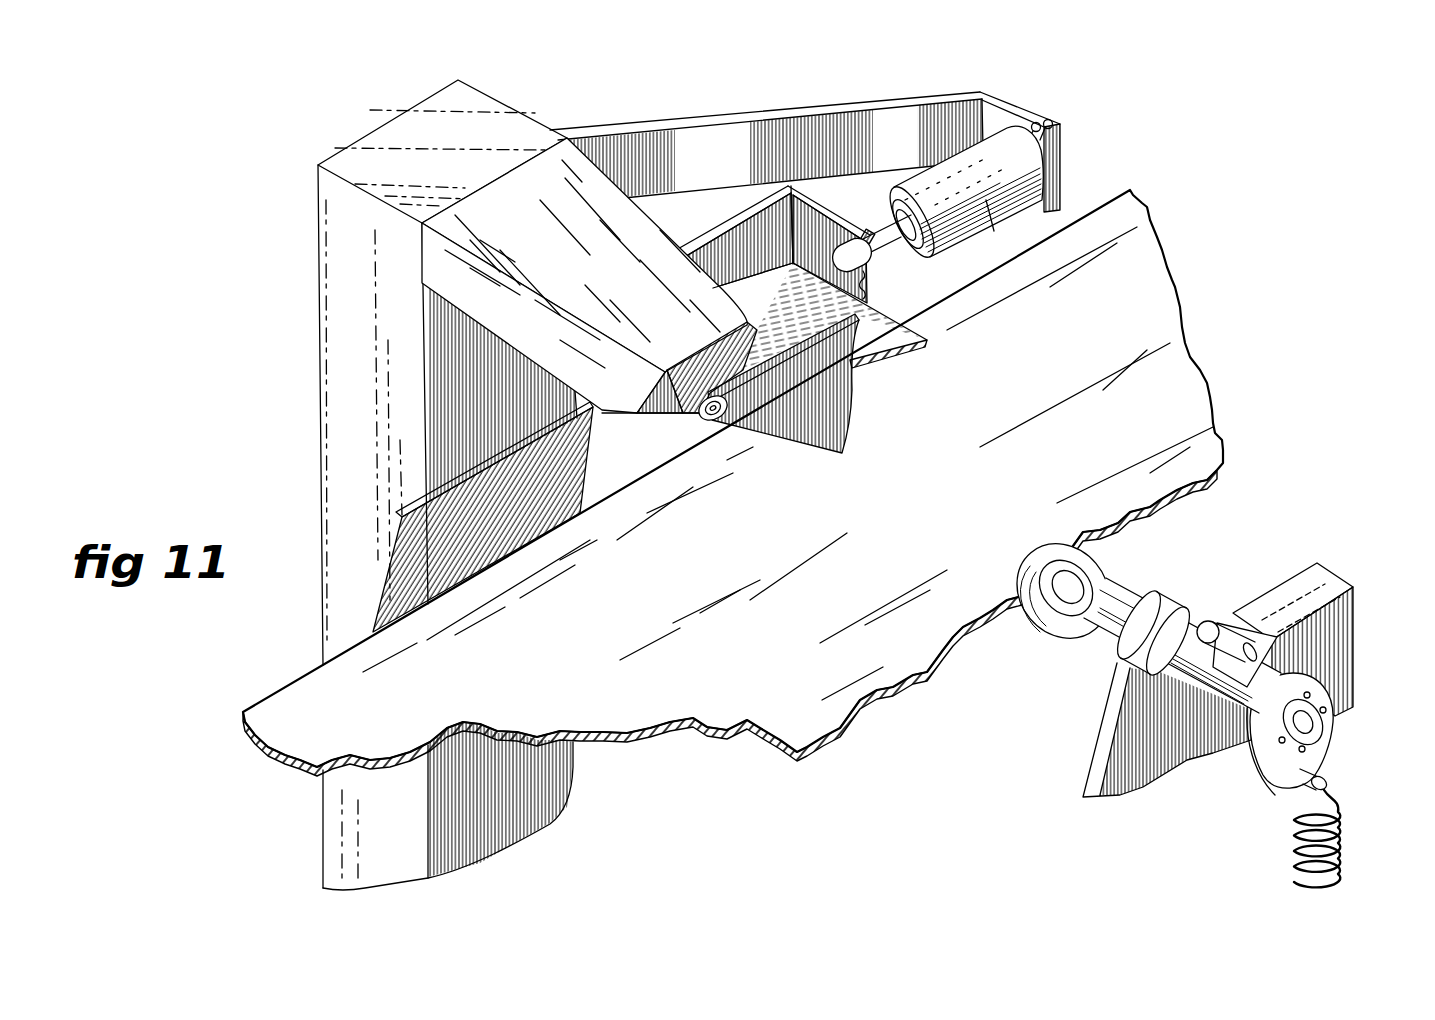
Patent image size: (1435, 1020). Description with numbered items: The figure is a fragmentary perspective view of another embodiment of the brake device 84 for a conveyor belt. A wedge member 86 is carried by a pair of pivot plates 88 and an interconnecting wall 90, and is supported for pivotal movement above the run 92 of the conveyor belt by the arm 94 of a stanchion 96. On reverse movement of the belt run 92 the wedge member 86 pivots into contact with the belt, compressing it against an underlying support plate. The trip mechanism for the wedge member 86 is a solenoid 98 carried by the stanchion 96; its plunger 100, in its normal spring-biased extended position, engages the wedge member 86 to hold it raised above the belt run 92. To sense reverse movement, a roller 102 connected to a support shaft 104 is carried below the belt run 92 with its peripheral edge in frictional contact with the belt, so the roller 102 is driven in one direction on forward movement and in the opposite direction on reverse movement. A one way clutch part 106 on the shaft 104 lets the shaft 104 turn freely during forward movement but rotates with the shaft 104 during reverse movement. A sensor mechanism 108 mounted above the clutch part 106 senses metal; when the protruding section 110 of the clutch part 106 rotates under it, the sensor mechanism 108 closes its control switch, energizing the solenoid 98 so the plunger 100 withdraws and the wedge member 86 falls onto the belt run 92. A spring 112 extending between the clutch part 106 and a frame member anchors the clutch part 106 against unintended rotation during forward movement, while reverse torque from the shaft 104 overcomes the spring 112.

The brake device 84 is at (783, 458).
The wedge member 86 is at (860, 231).
The pivot plates 88 is at (713, 230).
The interconnecting wall 90 is at (890, 352).
The run of a conveyor belt 92 is at (1153, 293).
The arm 94 is at (615, 382).
The stanchion 96 is at (337, 316).
The solenoid 98 is at (997, 215).
The plunger 100 is at (883, 248).
The roller 102 is at (1037, 613).
The support shaft 104 is at (1117, 600).
The one way clutch part 106 is at (1338, 736).
The sensor mechanism 108 is at (1207, 621).
The protruding section 110 is at (1277, 784).
The spring 112 is at (1341, 825).